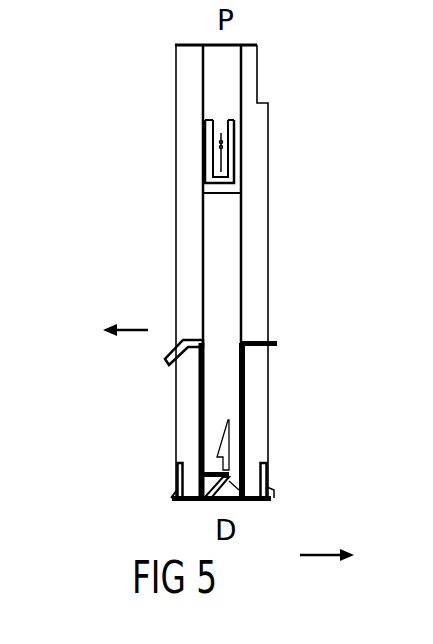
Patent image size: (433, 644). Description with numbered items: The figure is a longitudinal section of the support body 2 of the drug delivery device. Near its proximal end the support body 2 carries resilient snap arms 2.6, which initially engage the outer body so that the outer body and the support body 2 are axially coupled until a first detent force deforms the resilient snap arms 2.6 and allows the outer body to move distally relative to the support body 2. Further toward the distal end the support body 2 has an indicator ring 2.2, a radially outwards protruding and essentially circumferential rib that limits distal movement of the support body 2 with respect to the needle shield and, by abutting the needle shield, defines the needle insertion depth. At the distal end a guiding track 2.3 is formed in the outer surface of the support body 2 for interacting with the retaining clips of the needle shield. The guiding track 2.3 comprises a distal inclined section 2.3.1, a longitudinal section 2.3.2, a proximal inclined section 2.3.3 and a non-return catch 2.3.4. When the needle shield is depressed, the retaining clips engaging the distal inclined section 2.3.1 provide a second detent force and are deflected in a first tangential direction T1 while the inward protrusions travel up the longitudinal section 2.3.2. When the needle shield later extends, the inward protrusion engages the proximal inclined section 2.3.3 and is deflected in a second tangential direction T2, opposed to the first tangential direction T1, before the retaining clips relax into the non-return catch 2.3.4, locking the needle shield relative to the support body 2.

The support body 2 is at (155, 33).
The indicator ring 2.2 is at (277, 343).
The resilient snap arms 2.6 is at (228, 147).
The guiding track 2.3 is at (227, 465).
The distal inclined section 2.3.1 is at (273, 490).
The longitudinal section 2.3.2 is at (240, 451).
The proximal inclined section 2.3.3 is at (223, 443).
The non-return catch 2.3.4 is at (203, 462).
The first tangential direction T1 is at (336, 544).
The second tangential direction T2 is at (117, 315).